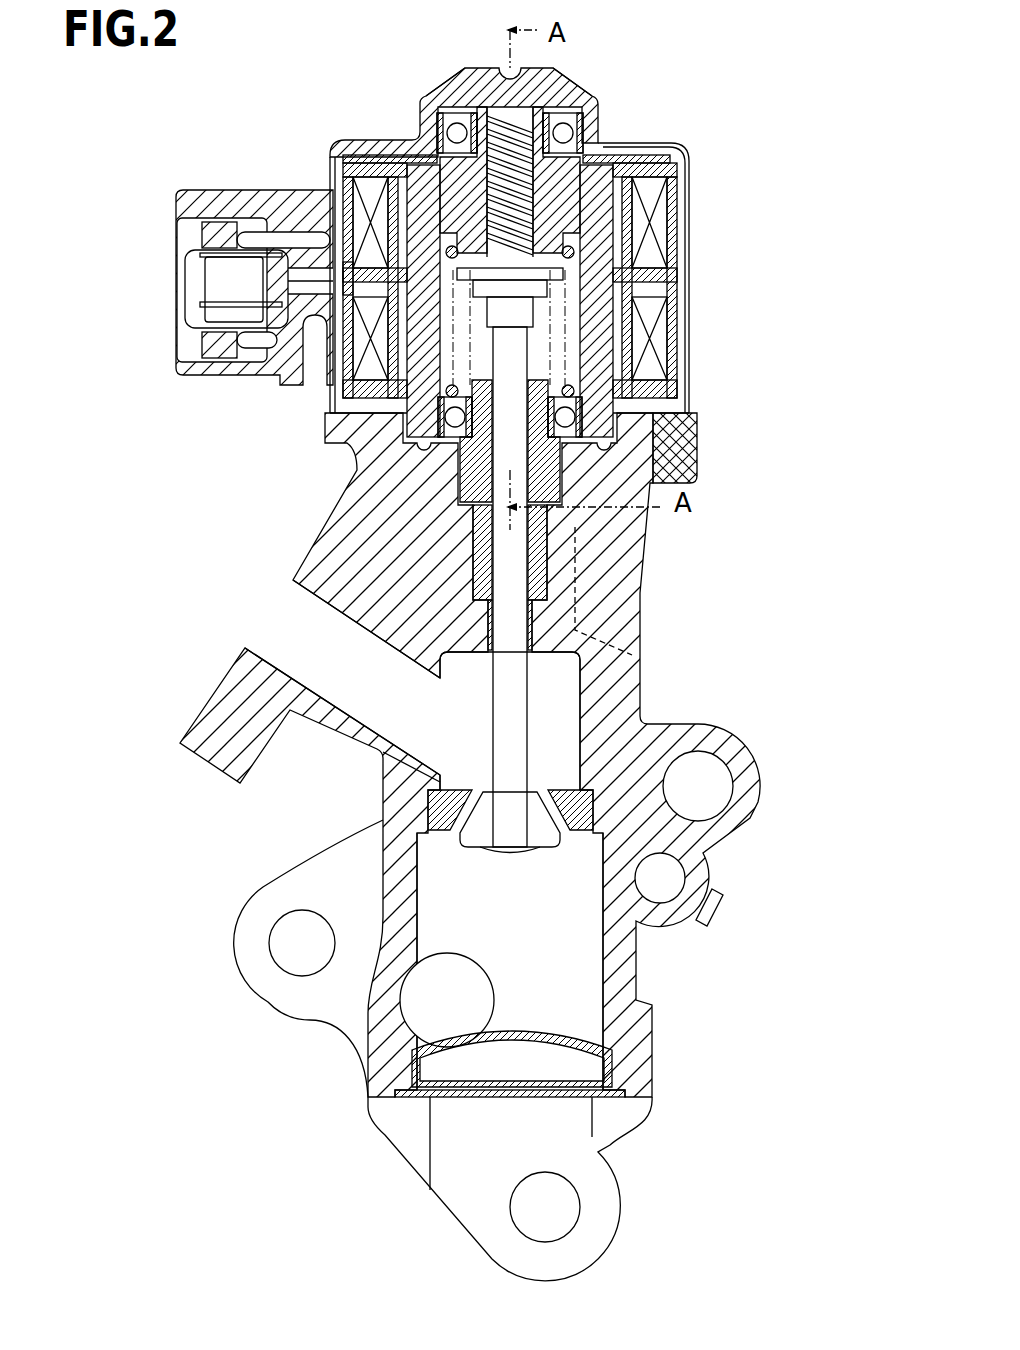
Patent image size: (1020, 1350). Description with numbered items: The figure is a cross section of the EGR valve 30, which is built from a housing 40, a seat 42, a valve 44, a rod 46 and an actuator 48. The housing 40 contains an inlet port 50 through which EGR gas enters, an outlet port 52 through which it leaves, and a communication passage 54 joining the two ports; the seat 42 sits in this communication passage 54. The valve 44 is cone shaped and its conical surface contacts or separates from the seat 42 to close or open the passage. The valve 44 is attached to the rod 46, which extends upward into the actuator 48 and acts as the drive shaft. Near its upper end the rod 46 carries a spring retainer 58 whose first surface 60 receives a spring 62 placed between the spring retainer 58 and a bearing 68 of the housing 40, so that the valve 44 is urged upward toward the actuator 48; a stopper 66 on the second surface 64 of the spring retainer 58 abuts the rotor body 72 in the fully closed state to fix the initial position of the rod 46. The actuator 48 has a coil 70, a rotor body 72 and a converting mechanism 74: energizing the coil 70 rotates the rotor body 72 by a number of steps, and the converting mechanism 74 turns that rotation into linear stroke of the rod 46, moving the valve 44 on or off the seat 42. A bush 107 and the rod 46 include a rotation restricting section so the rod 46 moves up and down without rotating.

The EGR valve 30 is at (287, 119).
The housing 40 is at (347, 528).
The seat 42 is at (598, 797).
The valve 44 is at (550, 843).
The rod 46 is at (522, 620).
The actuator 48 is at (793, 90).
The inlet port 50 is at (418, 1007).
The outlet port 52 is at (283, 613).
The communication passage 54 is at (383, 766).
The spring retainer 58 is at (625, 300).
The first surface 60 is at (600, 332).
The spring 62 is at (625, 378).
The second surface 64 is at (600, 272).
The stopper 66 is at (566, 281).
The bearing 68 is at (693, 448).
The coil 70 is at (668, 220).
The rotor body 72 is at (616, 146).
The converting mechanism 74 is at (522, 193).
The bush 107 is at (618, 493).